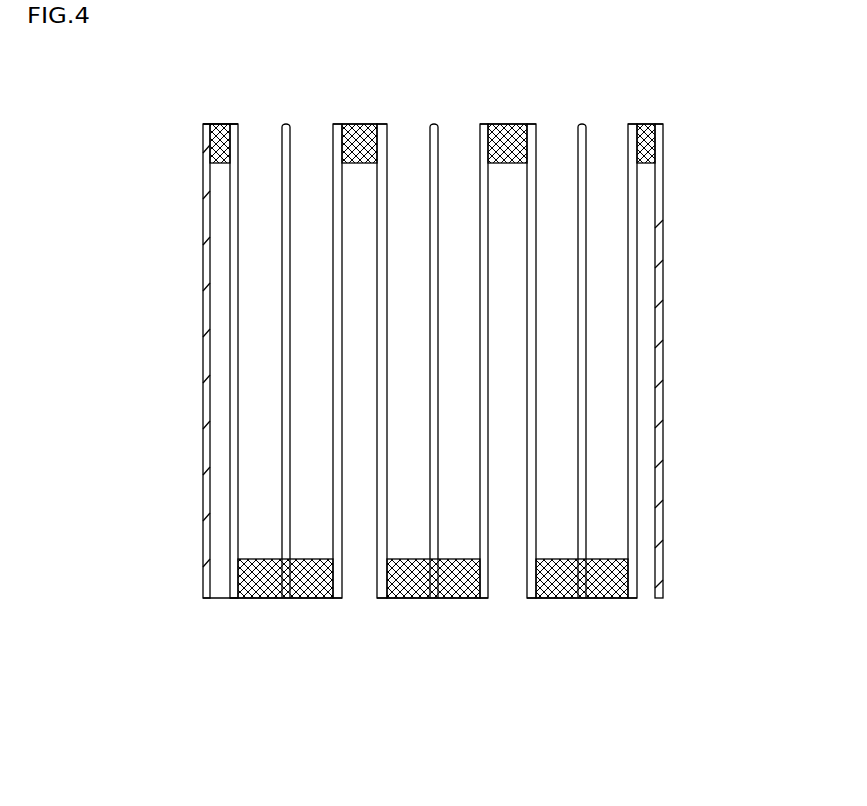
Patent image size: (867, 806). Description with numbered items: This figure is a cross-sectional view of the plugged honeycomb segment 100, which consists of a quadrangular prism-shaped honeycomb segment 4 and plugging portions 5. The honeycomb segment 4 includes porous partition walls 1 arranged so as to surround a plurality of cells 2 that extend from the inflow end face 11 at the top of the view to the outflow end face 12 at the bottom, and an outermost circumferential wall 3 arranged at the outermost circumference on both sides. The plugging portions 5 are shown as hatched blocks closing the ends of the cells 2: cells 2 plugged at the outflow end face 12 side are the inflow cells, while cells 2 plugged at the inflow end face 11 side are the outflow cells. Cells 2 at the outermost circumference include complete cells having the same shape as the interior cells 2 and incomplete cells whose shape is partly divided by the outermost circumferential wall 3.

The plugged honeycomb segment 100 is at (792, 60).
The partition wall 1 is at (431, 137).
The cell 2 is at (505, 190).
The outermost circumferential wall 3 is at (201, 272).
The honeycomb segment 4 is at (333, 117).
The plugging portion 5 is at (363, 123).
The inflow end face 11 is at (226, 110).
The outflow end face 12 is at (216, 614).